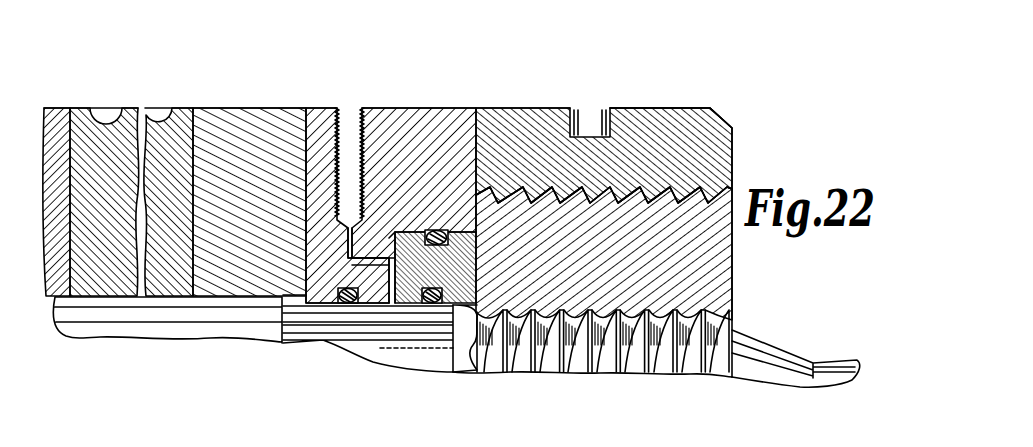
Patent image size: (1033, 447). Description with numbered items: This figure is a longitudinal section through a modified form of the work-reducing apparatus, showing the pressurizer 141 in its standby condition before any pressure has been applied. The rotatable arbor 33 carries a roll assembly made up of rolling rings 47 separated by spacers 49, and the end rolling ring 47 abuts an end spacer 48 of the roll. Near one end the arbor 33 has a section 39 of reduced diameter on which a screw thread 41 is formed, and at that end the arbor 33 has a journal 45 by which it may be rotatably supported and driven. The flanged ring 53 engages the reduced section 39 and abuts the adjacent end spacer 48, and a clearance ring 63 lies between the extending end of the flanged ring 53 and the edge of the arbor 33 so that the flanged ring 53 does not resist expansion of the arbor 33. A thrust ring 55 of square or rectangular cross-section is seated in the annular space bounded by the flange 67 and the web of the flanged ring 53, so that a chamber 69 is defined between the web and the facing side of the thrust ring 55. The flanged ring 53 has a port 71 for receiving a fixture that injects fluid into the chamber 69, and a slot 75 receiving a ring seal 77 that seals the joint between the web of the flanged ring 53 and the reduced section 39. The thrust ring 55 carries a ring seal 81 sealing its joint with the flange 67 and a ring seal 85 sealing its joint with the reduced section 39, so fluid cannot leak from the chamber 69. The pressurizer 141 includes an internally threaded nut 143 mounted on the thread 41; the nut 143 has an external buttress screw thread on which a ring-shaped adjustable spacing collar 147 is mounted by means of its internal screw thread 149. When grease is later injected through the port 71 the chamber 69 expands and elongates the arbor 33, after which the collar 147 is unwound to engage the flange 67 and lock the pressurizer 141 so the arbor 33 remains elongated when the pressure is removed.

The pressurizer 141 is at (737, 71).
The spacer 49 is at (60, 109).
The rolling ring 47 is at (118, 110).
The end spacer 48 is at (248, 116).
The port 71 is at (343, 107).
The flanged ring 53 is at (417, 108).
The flange 67 is at (458, 108).
The adjustable spacing collar 147 is at (685, 108).
The internal screw thread 149 is at (677, 195).
The nut 143 is at (733, 292).
The ring seal 85 is at (433, 304).
The slot 75 is at (347, 303).
The ring seal 77 is at (432, 295).
The ring seal 81 is at (446, 241).
The chamber 69 is at (382, 306).
The arbor 33 is at (116, 342).
The clearance ring 63 is at (286, 301).
The section of reduced diameter 39 is at (353, 348).
The thrust ring 55 is at (460, 306).
The screw thread 41 is at (605, 360).
The journal 45 is at (780, 349).